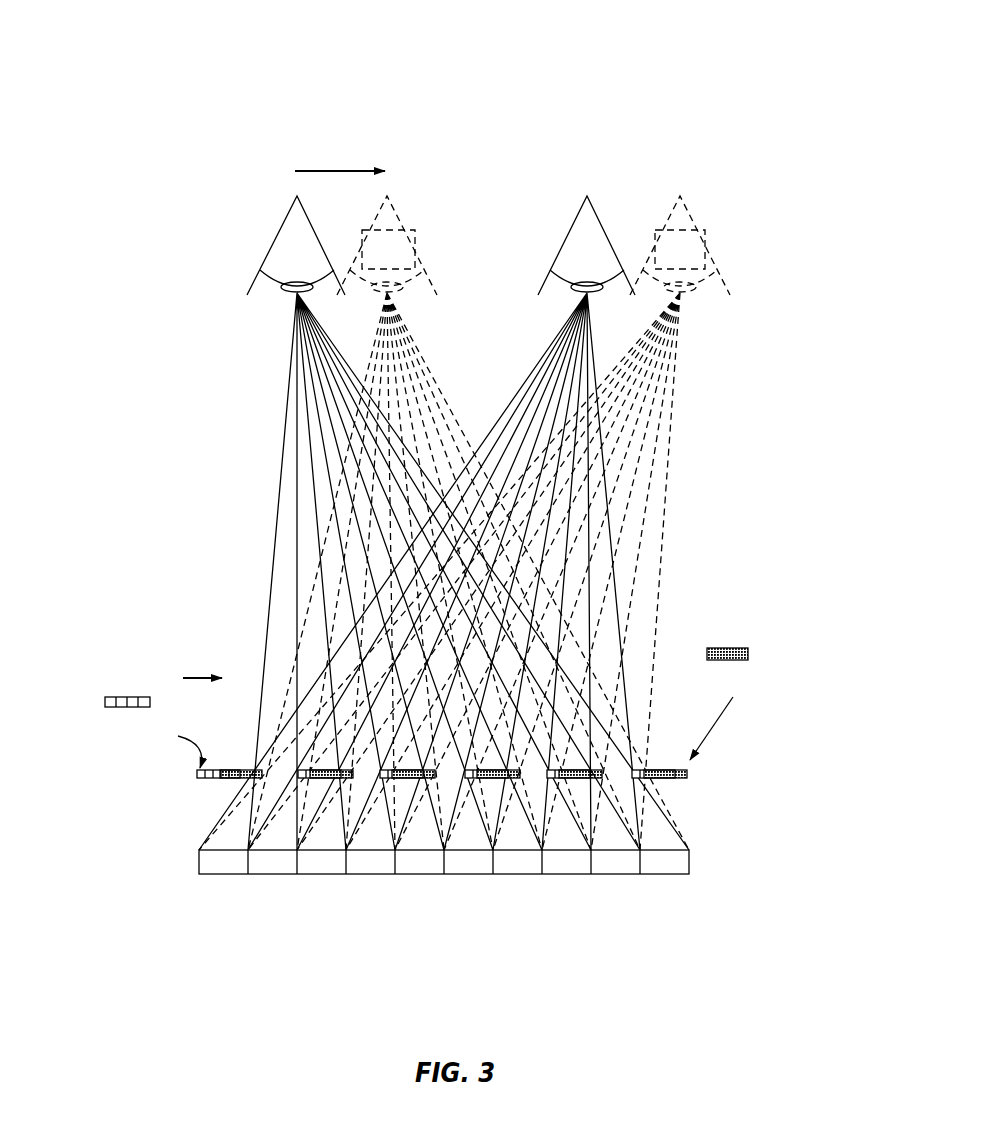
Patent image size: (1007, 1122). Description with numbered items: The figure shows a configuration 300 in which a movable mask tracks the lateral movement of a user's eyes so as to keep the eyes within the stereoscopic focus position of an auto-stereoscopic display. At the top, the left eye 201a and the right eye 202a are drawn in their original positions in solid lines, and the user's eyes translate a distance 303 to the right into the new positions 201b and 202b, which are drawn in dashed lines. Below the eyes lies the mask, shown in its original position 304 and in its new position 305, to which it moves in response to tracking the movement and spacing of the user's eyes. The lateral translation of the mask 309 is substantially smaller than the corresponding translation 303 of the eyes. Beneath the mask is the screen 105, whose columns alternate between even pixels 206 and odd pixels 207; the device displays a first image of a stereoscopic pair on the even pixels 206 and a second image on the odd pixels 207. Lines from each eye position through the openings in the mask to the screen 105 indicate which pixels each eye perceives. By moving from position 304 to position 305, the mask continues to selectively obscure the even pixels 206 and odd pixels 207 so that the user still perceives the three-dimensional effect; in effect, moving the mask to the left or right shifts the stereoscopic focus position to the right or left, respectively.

The configuration 300 is at (223, 62).
The distance 303 is at (322, 172).
The left eye 201a is at (285, 232).
The left eye position 201b is at (391, 218).
The right eye 202a is at (598, 230).
The right eye position 202b is at (684, 228).
The mask position 304 is at (126, 697).
The lateral translation of the mask 309 is at (205, 676).
The mask position 305 is at (230, 778).
The screen 105 is at (690, 816).
The even pixels 206 is at (614, 896).
The odd pixels 207 is at (663, 896).